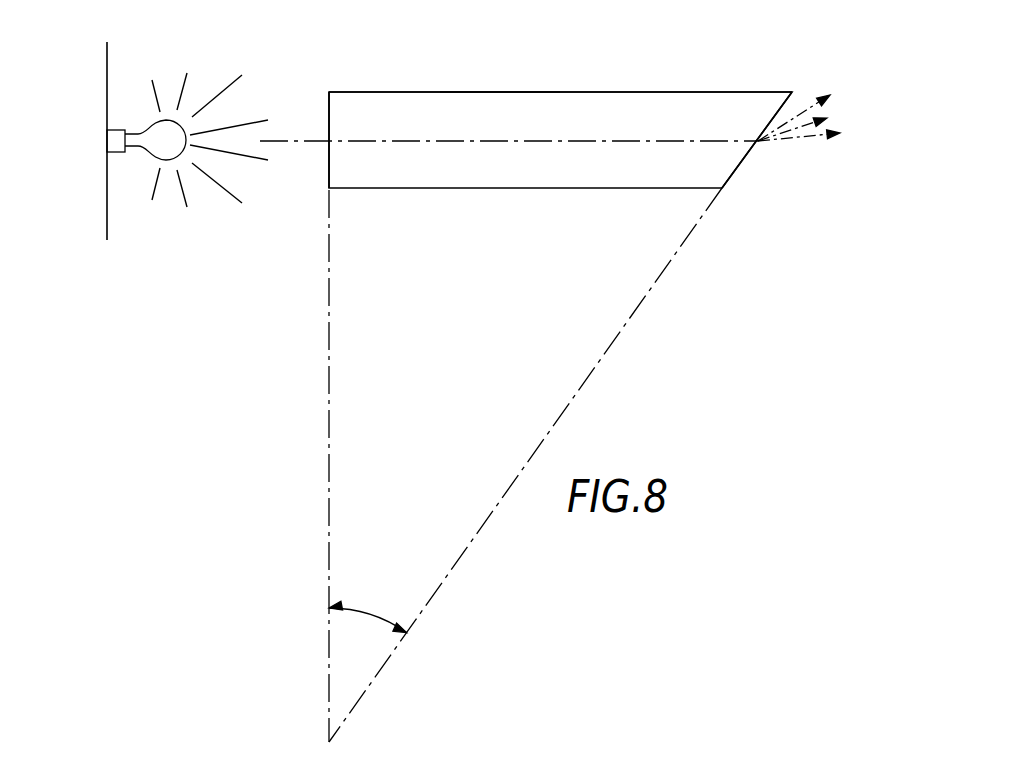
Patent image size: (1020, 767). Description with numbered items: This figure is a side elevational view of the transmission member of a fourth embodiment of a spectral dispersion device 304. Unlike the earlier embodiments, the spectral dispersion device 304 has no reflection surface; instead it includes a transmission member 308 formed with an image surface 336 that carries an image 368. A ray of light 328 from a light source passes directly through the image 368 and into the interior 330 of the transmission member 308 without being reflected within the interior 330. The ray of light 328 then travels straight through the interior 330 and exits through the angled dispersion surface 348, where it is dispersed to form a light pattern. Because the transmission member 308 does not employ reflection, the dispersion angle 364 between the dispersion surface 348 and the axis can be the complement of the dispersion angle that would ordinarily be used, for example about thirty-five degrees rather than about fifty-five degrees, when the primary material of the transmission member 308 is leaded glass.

The spectral dispersion device 304 is at (516, 88).
The transmission member 308 is at (636, 90).
The ray of light 328 is at (358, 141).
The interior 330 is at (450, 108).
The image surface 336 is at (328, 157).
The dispersion surface 348 is at (743, 160).
The dispersion angle 364 is at (375, 618).
The image 368 is at (328, 113).